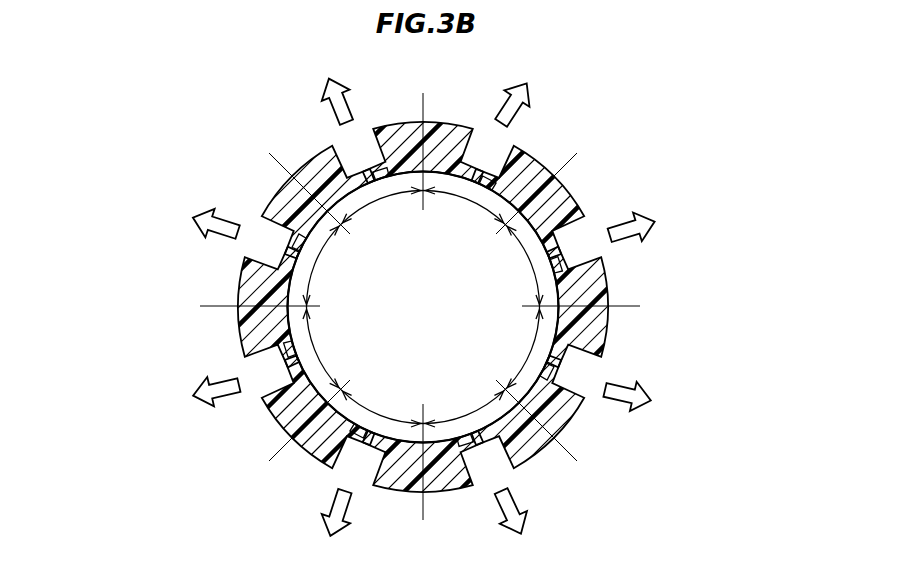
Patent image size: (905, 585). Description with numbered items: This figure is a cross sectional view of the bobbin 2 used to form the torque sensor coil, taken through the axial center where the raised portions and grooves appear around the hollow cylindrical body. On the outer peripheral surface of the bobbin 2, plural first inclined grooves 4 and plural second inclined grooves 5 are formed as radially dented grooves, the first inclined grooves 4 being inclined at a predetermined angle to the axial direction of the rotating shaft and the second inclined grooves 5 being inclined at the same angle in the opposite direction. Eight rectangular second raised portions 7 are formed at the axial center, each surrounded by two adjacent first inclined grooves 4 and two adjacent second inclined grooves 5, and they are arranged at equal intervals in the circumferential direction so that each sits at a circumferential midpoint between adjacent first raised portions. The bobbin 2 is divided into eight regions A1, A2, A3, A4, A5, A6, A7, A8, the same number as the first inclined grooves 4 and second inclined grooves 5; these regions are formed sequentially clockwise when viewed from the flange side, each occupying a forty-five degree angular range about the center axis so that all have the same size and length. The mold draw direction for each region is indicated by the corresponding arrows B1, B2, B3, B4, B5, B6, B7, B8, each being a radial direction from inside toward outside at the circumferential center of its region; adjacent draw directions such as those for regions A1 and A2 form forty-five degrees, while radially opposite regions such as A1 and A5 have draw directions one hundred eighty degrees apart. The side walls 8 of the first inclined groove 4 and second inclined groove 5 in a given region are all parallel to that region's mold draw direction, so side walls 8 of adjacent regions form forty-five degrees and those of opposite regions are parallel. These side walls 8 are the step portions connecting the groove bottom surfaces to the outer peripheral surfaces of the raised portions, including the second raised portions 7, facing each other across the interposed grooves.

The bobbin 2 is at (210, 103).
The first inclined grooves 4 is at (482, 142).
The second inclined grooves 5 is at (500, 142).
The second raised portions 7 is at (578, 150).
The side walls 8 is at (588, 353).
The region A1 is at (443, 207).
The region A2 is at (508, 247).
The region A3 is at (521, 323).
The region A4 is at (483, 391).
The region A5 is at (407, 405).
The region A6 is at (343, 365).
The region A7 is at (330, 289).
The region A8 is at (367, 221).
The arrow B1 is at (523, 90).
The arrow B2 is at (652, 217).
The arrow B3 is at (636, 405).
The arrow B4 is at (522, 523).
The arrow B5 is at (323, 517).
The arrow B6 is at (207, 408).
The arrow B7 is at (208, 208).
The arrow B8 is at (322, 90).